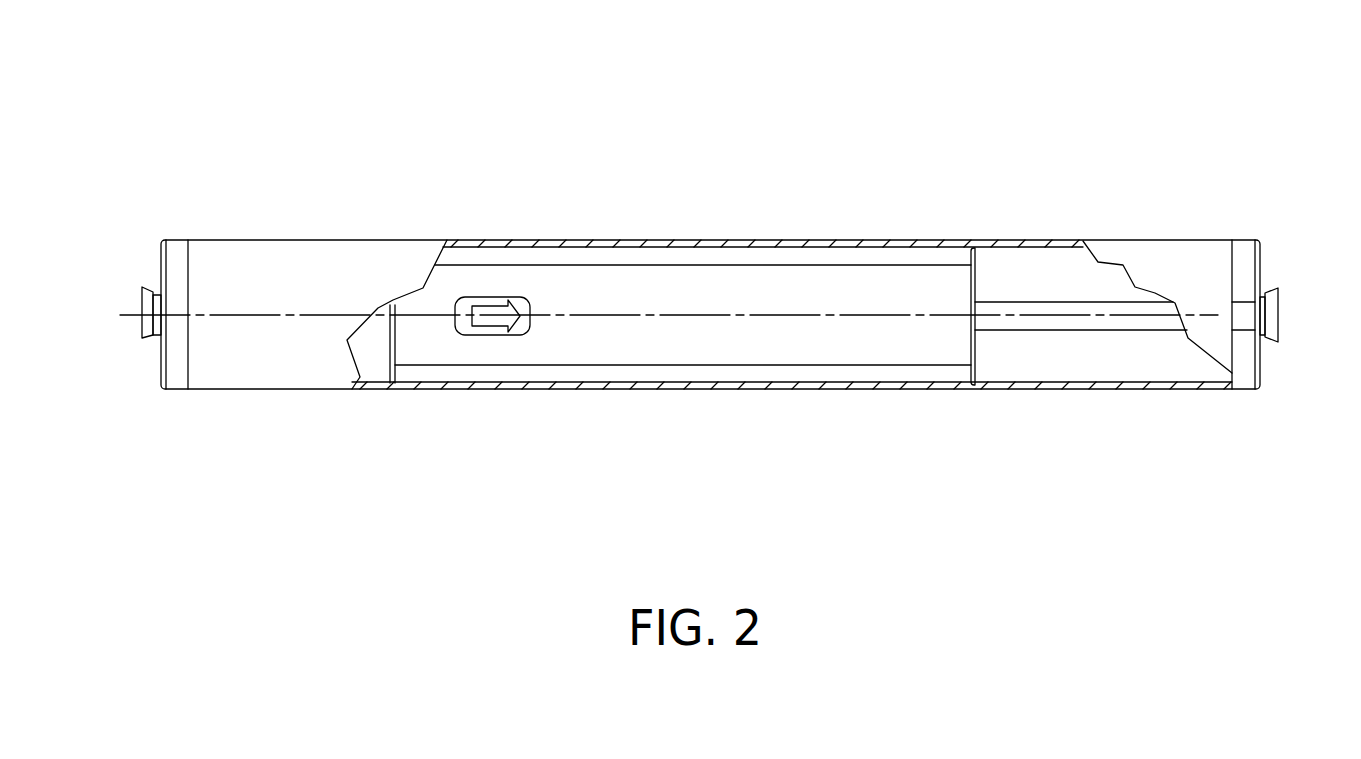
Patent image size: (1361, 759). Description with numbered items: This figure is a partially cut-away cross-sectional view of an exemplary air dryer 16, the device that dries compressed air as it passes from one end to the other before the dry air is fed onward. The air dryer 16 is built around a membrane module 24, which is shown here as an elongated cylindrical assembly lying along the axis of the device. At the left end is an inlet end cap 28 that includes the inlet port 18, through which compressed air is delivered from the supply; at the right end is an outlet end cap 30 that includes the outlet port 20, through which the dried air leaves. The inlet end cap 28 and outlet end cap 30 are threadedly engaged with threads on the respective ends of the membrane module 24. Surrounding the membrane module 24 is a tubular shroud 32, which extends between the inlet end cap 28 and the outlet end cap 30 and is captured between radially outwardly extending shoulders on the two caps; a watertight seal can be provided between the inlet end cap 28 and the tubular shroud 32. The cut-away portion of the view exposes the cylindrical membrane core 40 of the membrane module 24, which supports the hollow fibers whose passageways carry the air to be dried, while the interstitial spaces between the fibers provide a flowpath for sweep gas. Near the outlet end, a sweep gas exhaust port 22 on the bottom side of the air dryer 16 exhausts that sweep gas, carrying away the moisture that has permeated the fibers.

The air dryer 16 is at (556, 120).
The inlet port 18 is at (140, 338).
The outlet port 20 is at (1273, 340).
The sweep gas exhaust port 22 is at (1245, 315).
The membrane module 24 is at (774, 372).
The inlet end cap 28 is at (375, 367).
The outlet end cap 30 is at (1200, 259).
The tubular shroud 32 is at (732, 240).
The cylindrical membrane core 40 is at (860, 267).